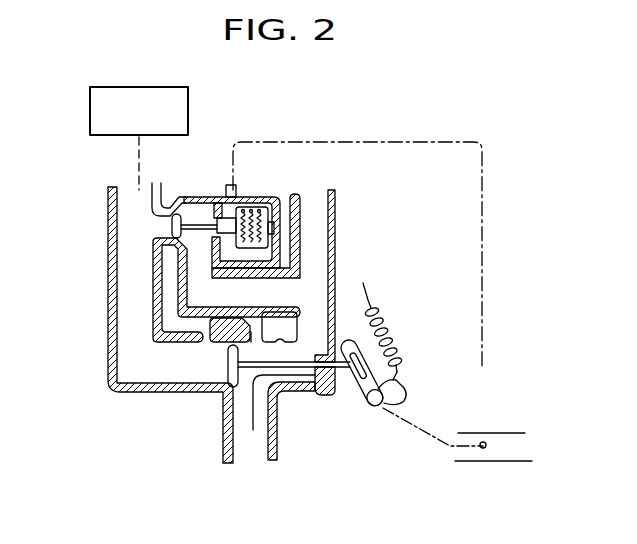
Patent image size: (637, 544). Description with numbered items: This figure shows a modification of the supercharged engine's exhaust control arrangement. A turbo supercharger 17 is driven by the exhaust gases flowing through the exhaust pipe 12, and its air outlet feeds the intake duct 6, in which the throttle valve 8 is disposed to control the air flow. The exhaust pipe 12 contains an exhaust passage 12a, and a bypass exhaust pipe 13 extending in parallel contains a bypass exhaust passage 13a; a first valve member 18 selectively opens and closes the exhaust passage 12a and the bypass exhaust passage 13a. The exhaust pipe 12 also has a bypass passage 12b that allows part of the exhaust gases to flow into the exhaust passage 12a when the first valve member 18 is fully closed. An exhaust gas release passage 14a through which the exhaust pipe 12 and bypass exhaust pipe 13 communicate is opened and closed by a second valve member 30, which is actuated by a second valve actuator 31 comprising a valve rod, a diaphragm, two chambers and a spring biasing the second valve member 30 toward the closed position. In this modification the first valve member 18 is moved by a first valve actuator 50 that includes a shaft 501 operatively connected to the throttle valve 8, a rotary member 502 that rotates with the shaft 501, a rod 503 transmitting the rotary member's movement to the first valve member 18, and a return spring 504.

The turbo supercharger 17 is at (188, 103).
The second valve member 30 is at (189, 205).
The second valve actuator 31 is at (283, 181).
The bypass exhaust pipe 13 is at (335, 207).
The bypass exhaust passage 13a is at (318, 238).
The exhaust pipe 12 is at (110, 245).
The exhaust passage 12a is at (130, 273).
The exhaust gas release passage 14a is at (200, 282).
The bypass passage 12b is at (207, 322).
The first valve member 18 is at (227, 377).
The link member 503 is at (313, 334).
The return spring 504 is at (390, 337).
The rotary member 502 is at (407, 402).
The shaft 501 is at (376, 412).
The first valve actuator 50 is at (353, 412).
The intake duct 6 is at (483, 442).
The throttle valve 8 is at (483, 448).